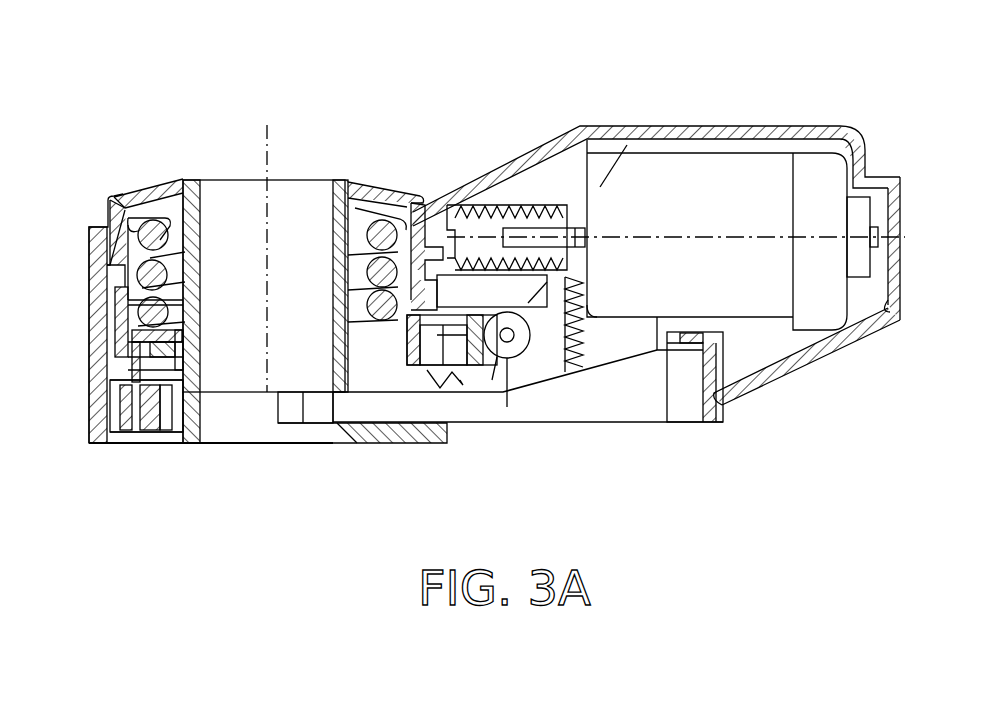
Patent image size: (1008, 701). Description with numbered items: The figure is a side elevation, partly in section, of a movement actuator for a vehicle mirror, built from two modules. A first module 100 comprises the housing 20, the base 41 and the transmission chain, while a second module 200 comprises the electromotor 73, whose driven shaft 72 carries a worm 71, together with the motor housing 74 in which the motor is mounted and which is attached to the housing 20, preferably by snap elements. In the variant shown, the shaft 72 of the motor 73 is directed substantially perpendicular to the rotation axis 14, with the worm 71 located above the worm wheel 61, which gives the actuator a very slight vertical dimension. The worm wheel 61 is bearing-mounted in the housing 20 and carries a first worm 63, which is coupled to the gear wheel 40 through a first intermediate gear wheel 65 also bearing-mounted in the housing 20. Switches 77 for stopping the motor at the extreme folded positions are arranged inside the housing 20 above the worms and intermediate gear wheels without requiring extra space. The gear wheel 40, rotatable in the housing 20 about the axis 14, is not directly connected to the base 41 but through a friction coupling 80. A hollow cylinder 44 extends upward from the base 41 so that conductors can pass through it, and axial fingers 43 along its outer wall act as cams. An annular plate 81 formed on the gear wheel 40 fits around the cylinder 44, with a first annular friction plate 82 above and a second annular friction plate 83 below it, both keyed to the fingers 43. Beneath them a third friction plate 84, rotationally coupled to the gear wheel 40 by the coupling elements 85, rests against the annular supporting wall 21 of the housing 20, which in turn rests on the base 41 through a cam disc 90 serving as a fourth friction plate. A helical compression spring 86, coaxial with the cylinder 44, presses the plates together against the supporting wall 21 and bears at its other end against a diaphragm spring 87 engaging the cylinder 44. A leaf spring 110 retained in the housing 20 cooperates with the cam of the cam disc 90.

The axis 14 is at (265, 163).
The housing 20 is at (89, 227).
The annular supporting wall 21 is at (127, 430).
The gear wheel 40 is at (110, 432).
The base 41 is at (350, 447).
The axial fingers 43 is at (183, 330).
The cylinder 44 is at (345, 179).
The worm wheel 61 is at (577, 330).
The first worm 63 is at (514, 357).
The first intermediate gear wheel 65 is at (499, 345).
The worm 71 is at (482, 205).
The driven shaft 72 is at (526, 226).
The electromotor 73 is at (675, 153).
The motor housing 74 is at (738, 127).
The switches 77 is at (465, 200).
The friction coupling 80 is at (281, 535).
The annular plate 81 is at (183, 352).
The first annular friction plate 82 is at (183, 343).
The second annular friction plate 83 is at (183, 360).
The third friction plate 84 is at (203, 387).
The coupling elements 85 is at (157, 440).
The compression spring 86 is at (160, 283).
The diaphragm spring 87 is at (150, 190).
The cam disc 90 is at (132, 437).
The first module 100 is at (168, 178).
The leaf spring 110 is at (640, 423).
The second module 200 is at (806, 118).